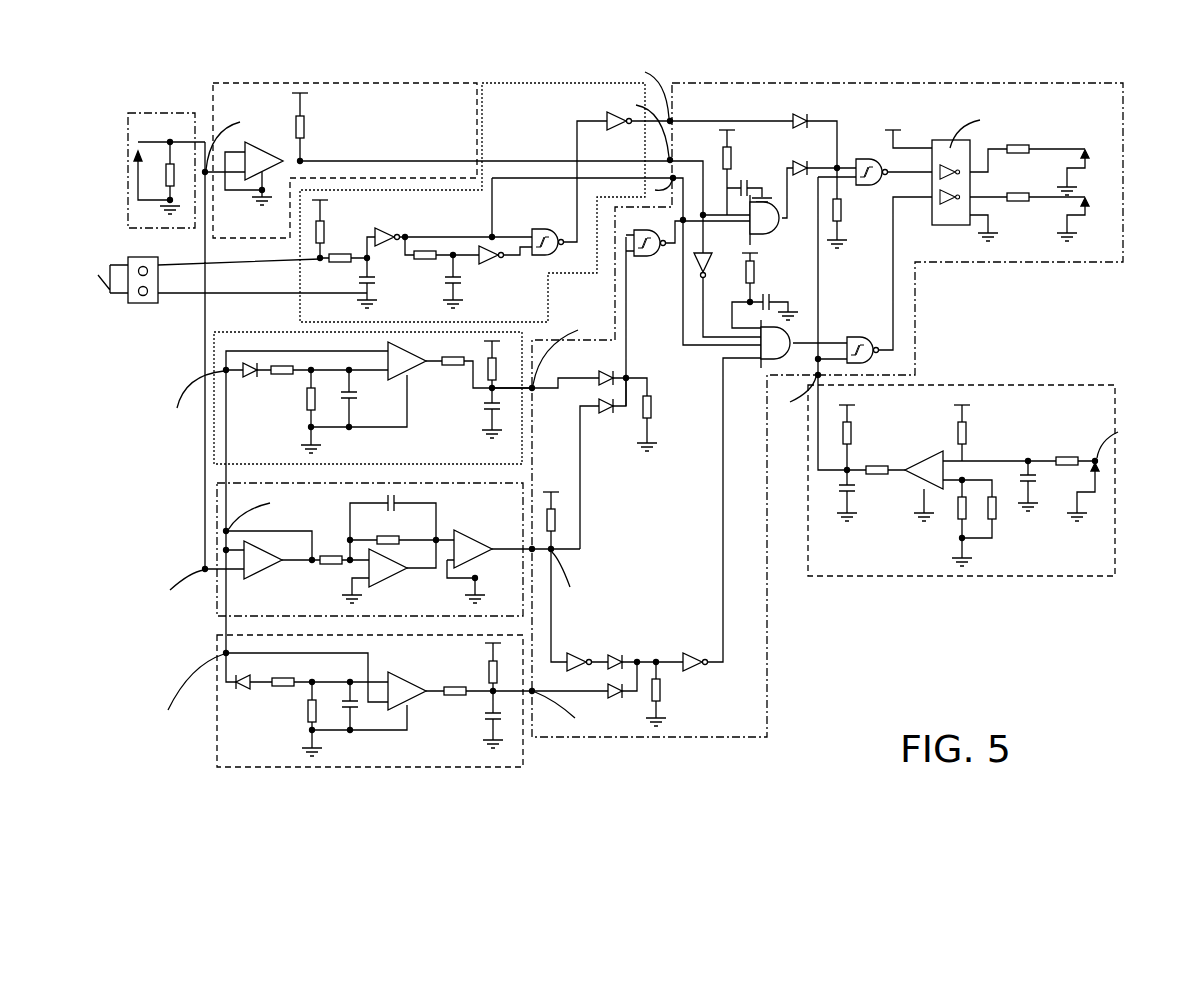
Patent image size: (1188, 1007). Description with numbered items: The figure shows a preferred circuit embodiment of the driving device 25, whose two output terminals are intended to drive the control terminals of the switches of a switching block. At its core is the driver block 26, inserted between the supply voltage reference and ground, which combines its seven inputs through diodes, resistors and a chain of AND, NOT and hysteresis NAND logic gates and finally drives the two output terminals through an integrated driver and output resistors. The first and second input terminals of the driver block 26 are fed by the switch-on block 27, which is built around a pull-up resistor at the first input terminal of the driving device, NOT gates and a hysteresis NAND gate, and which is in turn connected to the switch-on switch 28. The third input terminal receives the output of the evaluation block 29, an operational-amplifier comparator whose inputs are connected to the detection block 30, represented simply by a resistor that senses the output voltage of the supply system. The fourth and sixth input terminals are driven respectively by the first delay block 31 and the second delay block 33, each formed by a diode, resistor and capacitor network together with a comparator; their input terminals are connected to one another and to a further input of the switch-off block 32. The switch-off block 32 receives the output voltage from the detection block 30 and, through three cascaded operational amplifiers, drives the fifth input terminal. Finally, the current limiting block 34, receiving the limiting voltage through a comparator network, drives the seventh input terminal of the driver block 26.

The driving device 25 is at (950, 633).
The driver block 26 is at (943, 243).
The switch-on block 27 is at (540, 100).
The switch-on switch 28 is at (138, 326).
The evaluation block 29 is at (258, 100).
The detection block 30 is at (147, 123).
The first delay block 31 is at (237, 408).
The switch-off block 32 is at (235, 607).
The second delay block 33 is at (237, 738).
The current limiting block 34 is at (1037, 405).